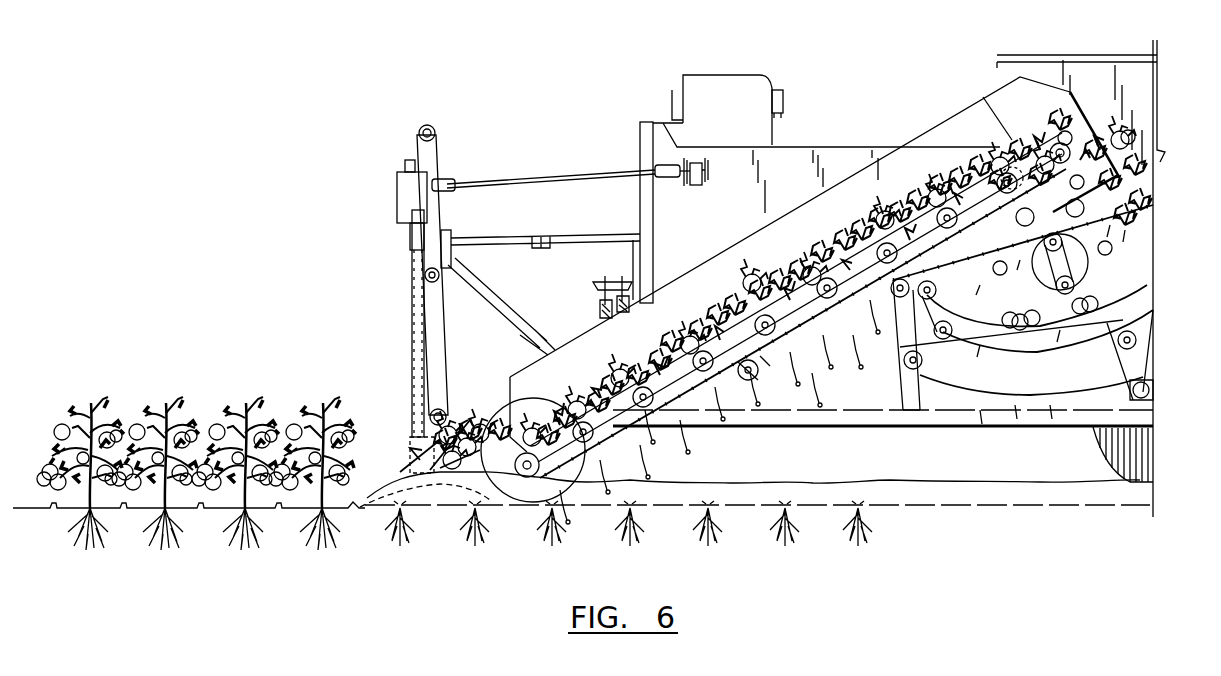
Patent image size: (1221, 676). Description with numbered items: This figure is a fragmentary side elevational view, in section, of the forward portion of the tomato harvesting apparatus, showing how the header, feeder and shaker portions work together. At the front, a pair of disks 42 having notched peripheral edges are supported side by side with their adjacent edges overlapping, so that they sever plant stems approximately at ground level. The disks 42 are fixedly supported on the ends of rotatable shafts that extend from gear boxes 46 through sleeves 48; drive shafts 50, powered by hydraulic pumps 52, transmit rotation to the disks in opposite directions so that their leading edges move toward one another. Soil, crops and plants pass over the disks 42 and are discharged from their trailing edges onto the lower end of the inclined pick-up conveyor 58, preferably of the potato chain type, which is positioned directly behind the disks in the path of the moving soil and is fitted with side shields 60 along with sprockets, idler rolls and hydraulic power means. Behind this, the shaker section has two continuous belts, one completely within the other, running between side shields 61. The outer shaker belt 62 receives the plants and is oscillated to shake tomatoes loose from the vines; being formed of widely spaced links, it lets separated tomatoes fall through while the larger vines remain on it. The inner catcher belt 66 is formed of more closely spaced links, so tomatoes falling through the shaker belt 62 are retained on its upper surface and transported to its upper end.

The disks 42 is at (366, 510).
The gear boxes 46 is at (398, 197).
The sleeves 48 is at (412, 300).
The drive shafts 50 is at (514, 172).
The hydraulic pumps 52 is at (665, 177).
The pick-up conveyor 58 is at (822, 328).
The side shields 60 is at (947, 135).
The side shields 61 is at (1138, 256).
The shaker belt 62 is at (1022, 396).
The catcher belt 66 is at (1155, 318).